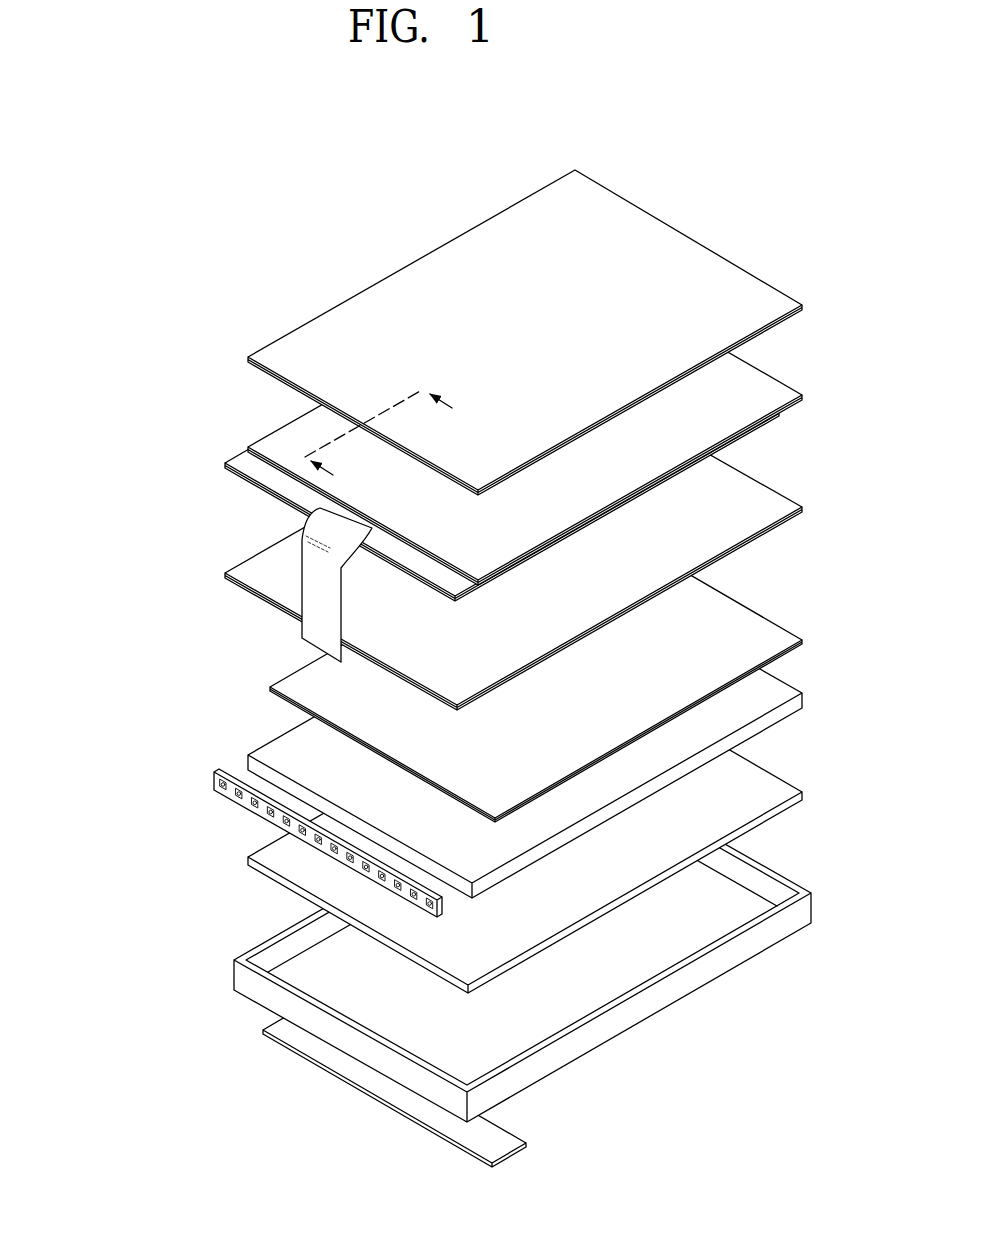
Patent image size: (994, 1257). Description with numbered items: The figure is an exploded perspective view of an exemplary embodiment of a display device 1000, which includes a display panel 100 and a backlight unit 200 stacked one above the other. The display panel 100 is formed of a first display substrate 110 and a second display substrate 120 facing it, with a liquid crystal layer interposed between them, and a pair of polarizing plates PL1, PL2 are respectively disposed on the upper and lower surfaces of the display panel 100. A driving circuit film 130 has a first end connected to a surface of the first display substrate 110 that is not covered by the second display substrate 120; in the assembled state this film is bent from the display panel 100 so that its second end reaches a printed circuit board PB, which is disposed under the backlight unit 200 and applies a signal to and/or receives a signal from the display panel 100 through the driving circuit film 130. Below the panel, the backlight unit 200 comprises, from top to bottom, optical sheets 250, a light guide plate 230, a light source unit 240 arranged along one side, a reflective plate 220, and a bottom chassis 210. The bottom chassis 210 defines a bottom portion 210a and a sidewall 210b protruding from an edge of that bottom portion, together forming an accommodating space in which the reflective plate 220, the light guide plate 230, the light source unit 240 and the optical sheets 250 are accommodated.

The display device 1000 is at (327, 221).
The display panel 100 is at (451, 462).
The first display substrate 110 is at (243, 459).
The second display substrate 120 is at (272, 443).
The driving circuit film 130 is at (315, 630).
The polarizing plate PL1 is at (272, 355).
The polarizing plate PL2 is at (243, 569).
The backlight unit 200 is at (97, 682).
The optical sheets 250 is at (259, 688).
The light guide plate 230 is at (268, 750).
The light source unit 240 is at (200, 778).
The reflective plate 220 is at (268, 852).
The bottom chassis 210 is at (455, 941).
The bottom portion 210a is at (330, 968).
The sidewall 210b is at (244, 980).
The printed circuit board PB is at (502, 1138).